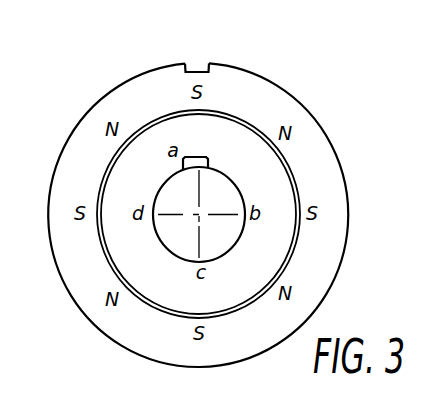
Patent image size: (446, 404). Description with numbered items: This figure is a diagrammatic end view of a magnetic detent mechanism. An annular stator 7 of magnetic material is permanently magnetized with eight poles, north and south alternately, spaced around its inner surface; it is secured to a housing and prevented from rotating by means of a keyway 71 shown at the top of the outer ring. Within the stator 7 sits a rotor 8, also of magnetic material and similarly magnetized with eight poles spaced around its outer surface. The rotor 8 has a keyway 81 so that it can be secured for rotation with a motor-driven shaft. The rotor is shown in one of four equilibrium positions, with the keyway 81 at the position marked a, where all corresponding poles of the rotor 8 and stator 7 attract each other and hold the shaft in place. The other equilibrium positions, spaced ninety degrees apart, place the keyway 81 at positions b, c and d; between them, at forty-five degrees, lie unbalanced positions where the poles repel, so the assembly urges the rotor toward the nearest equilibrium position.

The stator 7 is at (308, 137).
The keyway 71 is at (195, 65).
The rotor 8 is at (272, 248).
The keyway 81 is at (208, 157).